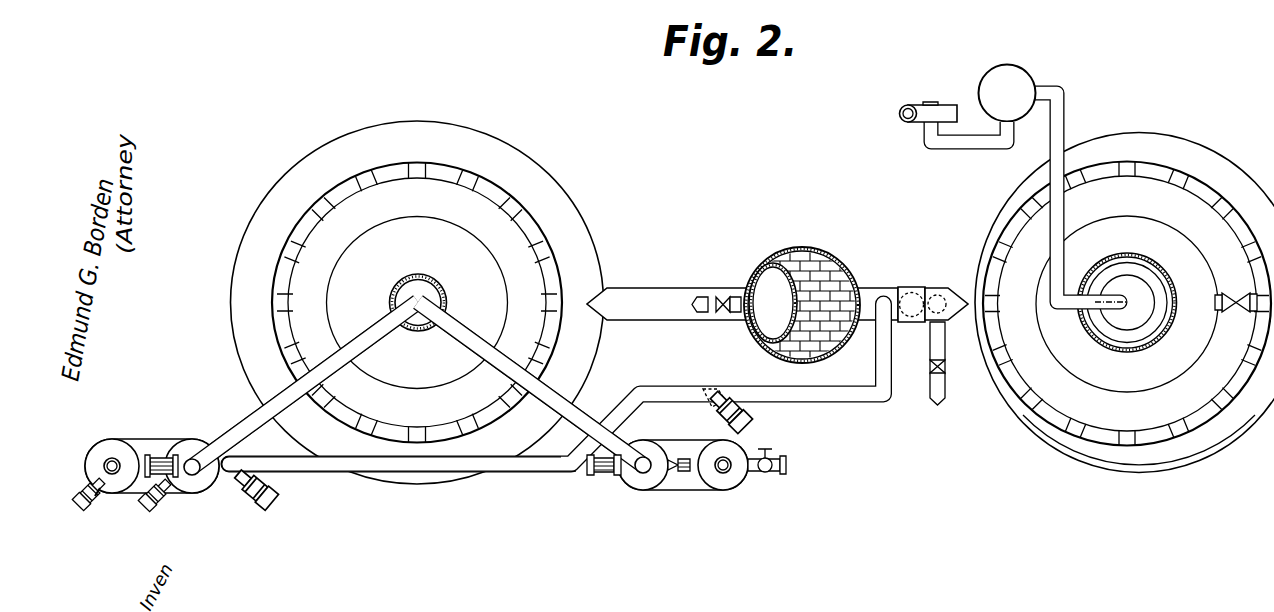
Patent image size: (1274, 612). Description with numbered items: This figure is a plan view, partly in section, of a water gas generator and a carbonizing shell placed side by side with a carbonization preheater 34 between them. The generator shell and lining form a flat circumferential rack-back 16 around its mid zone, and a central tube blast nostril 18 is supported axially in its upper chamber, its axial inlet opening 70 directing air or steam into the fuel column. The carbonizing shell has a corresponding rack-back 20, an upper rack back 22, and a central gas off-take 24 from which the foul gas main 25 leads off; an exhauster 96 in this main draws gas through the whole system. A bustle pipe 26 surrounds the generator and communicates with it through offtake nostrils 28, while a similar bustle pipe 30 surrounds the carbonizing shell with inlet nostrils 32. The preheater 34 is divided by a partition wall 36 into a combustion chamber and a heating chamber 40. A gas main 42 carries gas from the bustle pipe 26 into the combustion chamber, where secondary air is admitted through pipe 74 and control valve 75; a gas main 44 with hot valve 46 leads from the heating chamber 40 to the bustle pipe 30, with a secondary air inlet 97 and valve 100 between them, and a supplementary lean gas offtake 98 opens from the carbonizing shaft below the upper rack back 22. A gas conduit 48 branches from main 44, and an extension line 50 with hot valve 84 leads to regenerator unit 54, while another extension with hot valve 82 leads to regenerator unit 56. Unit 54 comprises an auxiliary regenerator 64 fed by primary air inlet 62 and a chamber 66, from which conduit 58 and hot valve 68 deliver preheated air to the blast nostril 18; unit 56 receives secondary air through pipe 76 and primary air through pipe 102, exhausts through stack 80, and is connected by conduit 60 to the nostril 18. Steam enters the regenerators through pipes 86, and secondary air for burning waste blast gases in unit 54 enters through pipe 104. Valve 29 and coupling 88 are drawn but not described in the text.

The rack-back 16 is at (336, 292).
The central tube blast nostril 18 is at (438, 287).
The rack-back 20 is at (1133, 468).
The upper rack back 22 is at (1190, 361).
The central gas off-take 24 is at (1150, 302).
The foul gas main 25 is at (1064, 217).
The bustle pipe 26 is at (564, 202).
The offtake nostrils 28 is at (425, 174).
The valve 29 is at (1234, 293).
The bustle pipe 30 is at (1222, 166).
The inlet nostrils 32 is at (1040, 369).
The carbonization preheater 34 is at (838, 256).
The partition wall 36 is at (790, 283).
The heating chamber 40 is at (848, 273).
The gas main 42 is at (630, 291).
The gas main 44 is at (868, 322).
The hot valve 46 is at (913, 287).
The gas conduit 48 is at (825, 403).
The extension line 50 is at (540, 472).
The regenerator unit 54 is at (174, 494).
The regenerator unit 56 is at (662, 491).
The conduit 58 is at (246, 428).
The conduit 60 is at (551, 388).
The inlet 62 is at (88, 506).
The auxiliary regenerator 64 is at (98, 451).
The chamber 66 is at (214, 483).
The hot valve 68 is at (161, 456).
The axial inlet opening 70 is at (440, 302).
The pipe 74 is at (702, 314).
The control valve 75 is at (728, 314).
The pipe 76 is at (684, 473).
The stack 80 is at (113, 457).
The hot valve 82 is at (748, 423).
The hot valve 84 is at (268, 504).
The pipes 86 is at (782, 465).
The coupling 88 is at (607, 476).
The exhauster 96 is at (942, 105).
The secondary air inlet 97 is at (934, 398).
The supplementary lean gas offtake 98 is at (1250, 312).
The valve 100 is at (946, 381).
The pipe 102 is at (770, 474).
The pipe 104 is at (155, 509).